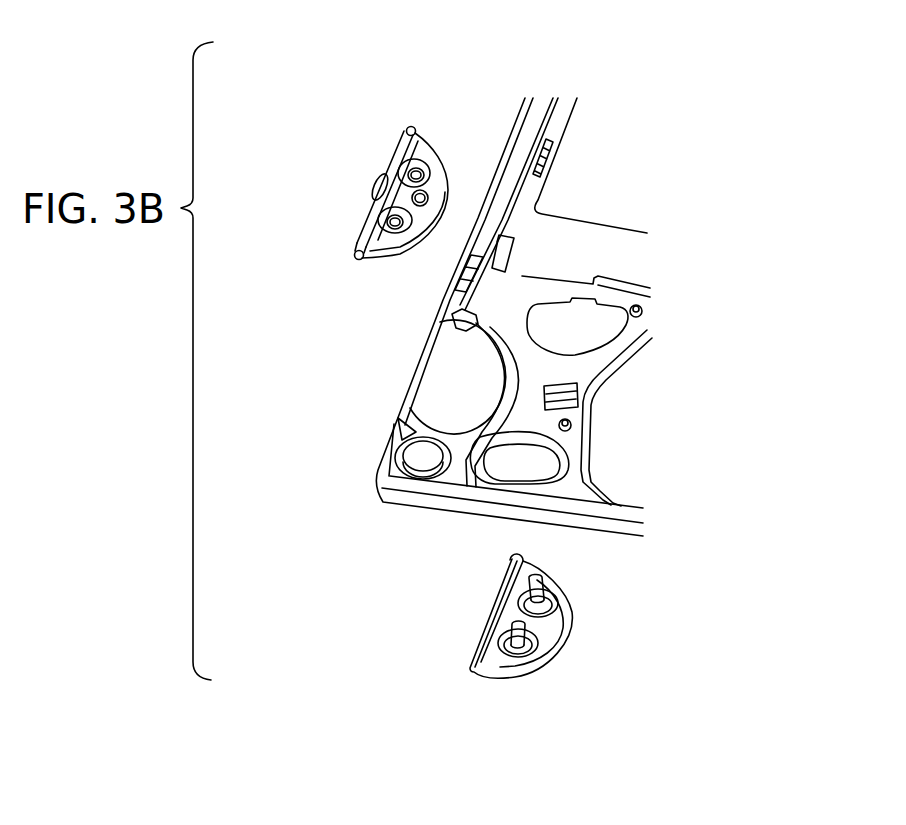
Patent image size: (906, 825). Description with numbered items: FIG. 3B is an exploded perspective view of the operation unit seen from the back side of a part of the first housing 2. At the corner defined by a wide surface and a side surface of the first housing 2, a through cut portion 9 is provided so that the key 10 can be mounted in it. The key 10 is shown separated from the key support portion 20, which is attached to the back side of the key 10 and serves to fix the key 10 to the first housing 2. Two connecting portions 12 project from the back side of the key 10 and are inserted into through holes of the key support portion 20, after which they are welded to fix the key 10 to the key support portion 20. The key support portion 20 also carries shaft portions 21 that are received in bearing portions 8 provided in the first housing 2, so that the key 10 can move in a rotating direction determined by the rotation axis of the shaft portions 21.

The first housing 2 is at (524, 120).
The bearing portions 8 is at (457, 315).
The cut portion 9 is at (443, 383).
The key 10 is at (572, 628).
The connecting portions 12 is at (545, 583).
The key support portion 20 is at (351, 185).
The shaft portions 21 is at (409, 131).